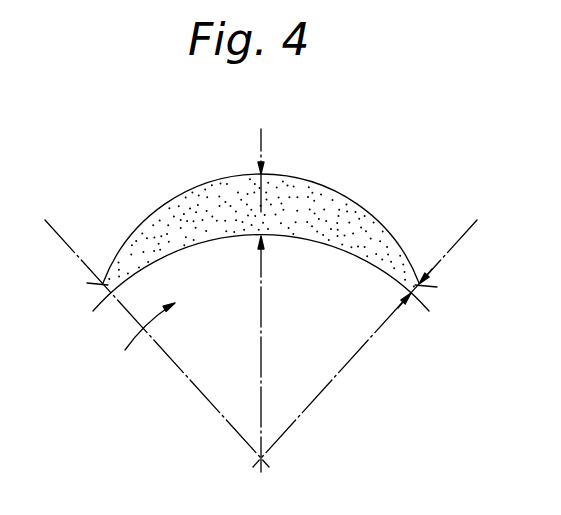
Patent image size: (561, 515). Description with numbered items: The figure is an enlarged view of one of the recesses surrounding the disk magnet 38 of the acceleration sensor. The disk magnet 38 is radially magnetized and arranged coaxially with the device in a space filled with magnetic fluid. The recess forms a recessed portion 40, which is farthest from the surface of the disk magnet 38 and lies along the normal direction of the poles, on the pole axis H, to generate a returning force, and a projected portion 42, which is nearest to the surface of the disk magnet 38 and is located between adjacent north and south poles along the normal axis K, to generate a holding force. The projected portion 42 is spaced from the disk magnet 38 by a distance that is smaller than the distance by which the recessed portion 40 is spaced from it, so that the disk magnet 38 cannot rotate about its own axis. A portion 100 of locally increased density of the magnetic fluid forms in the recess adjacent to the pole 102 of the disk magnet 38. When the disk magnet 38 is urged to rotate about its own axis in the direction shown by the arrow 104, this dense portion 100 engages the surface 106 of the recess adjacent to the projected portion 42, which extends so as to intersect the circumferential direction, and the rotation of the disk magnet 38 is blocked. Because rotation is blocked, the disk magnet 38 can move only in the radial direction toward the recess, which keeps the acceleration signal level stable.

The recessed portion 40 is at (285, 178).
The portion of locally increased density of the magnetic fluid 100 is at (282, 217).
The surface of the recess 106 is at (378, 222).
The pole 102 is at (262, 252).
The projected portion 42 is at (107, 284).
The disk magnet 38 is at (422, 312).
The arrow 104 is at (125, 350).
The pole axis H is at (258, 289).
The normal axis K is at (262, 335).